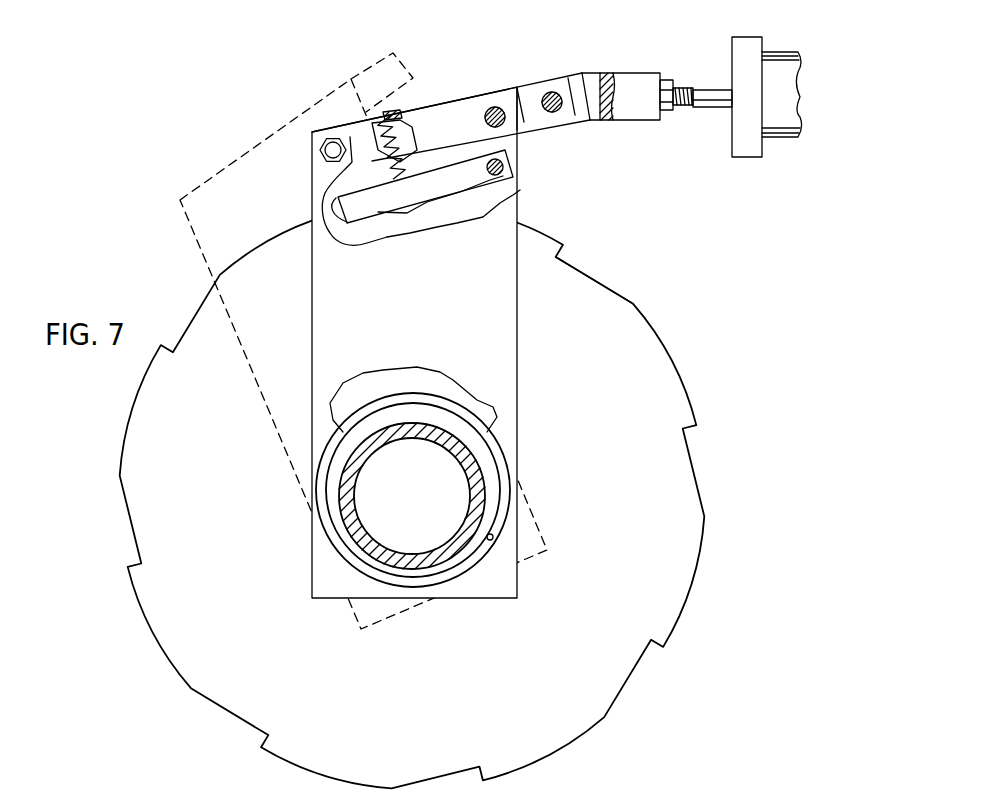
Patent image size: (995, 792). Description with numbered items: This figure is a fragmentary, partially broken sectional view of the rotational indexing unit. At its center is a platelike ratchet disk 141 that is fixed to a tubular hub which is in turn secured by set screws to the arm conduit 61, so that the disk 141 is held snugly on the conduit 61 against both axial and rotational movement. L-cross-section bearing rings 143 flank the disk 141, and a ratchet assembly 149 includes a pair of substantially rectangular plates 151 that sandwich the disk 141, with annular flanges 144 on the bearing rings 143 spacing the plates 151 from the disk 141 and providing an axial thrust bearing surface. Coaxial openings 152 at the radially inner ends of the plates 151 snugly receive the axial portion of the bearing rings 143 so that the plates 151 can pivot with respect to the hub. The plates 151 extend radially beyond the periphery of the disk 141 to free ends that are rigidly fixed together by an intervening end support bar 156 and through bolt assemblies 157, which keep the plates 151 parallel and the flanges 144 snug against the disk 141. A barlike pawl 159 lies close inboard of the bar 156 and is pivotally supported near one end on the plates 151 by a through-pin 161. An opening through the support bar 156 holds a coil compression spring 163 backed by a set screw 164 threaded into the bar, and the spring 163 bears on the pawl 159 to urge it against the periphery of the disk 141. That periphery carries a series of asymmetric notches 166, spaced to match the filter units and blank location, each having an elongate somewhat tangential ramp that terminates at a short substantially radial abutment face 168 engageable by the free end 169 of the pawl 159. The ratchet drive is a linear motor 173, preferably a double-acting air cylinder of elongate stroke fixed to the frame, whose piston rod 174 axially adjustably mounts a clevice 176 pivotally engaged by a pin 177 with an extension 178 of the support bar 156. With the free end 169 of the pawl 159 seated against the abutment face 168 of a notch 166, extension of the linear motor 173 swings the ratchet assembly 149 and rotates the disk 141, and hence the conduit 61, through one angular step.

The arm conduit 61 is at (478, 505).
The ratchet disk 141 is at (667, 380).
The bearing ring 143 is at (457, 390).
The annular flange 144 is at (485, 435).
The ratchet assembly 149 is at (286, 173).
The plate 151 is at (507, 230).
The coaxial opening 152 is at (491, 536).
The end support bar 156 is at (473, 110).
The through bolt assembly 157 is at (333, 147).
The pawl 159 is at (365, 208).
The through-pin 161 is at (502, 167).
The coil compression spring 163 is at (418, 152).
The set screw 164 is at (387, 118).
The asymmetric notch 166 is at (590, 272).
The abutment face 168 is at (343, 248).
The free end of the pawl 169 is at (325, 200).
The linear motor 173 is at (782, 63).
The piston rod 174 is at (712, 90).
The clevice 176 is at (637, 83).
The pin 177 is at (540, 80).
The extension 178 is at (574, 78).